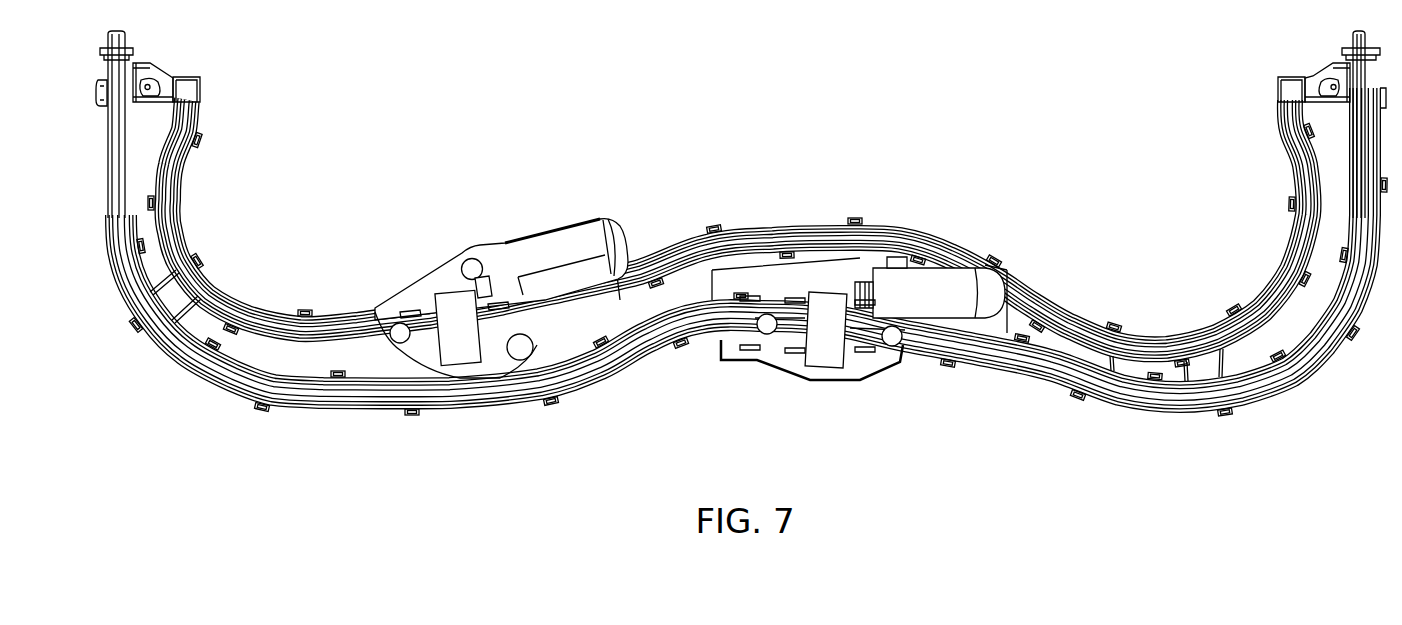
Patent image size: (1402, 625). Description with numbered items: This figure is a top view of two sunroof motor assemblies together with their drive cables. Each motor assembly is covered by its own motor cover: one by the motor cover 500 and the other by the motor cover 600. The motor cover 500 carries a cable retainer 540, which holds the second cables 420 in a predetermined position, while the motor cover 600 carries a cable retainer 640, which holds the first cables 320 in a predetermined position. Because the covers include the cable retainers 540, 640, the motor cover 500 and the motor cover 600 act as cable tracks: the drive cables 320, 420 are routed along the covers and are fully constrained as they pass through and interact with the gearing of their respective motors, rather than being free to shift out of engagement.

The first cables 320 is at (686, 341).
The second cables 420 is at (862, 226).
The motor cover 500 is at (498, 261).
The cable retainer 540 is at (425, 318).
The motor cover 600 is at (863, 356).
The cable retainer 640 is at (887, 352).